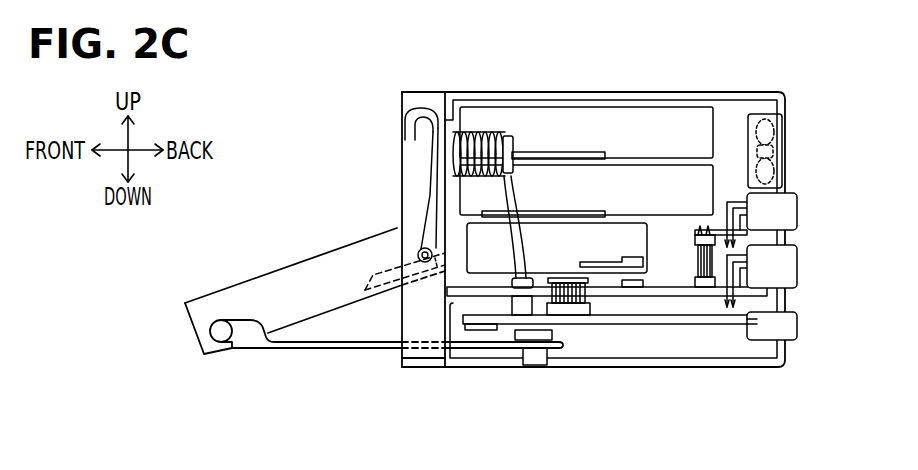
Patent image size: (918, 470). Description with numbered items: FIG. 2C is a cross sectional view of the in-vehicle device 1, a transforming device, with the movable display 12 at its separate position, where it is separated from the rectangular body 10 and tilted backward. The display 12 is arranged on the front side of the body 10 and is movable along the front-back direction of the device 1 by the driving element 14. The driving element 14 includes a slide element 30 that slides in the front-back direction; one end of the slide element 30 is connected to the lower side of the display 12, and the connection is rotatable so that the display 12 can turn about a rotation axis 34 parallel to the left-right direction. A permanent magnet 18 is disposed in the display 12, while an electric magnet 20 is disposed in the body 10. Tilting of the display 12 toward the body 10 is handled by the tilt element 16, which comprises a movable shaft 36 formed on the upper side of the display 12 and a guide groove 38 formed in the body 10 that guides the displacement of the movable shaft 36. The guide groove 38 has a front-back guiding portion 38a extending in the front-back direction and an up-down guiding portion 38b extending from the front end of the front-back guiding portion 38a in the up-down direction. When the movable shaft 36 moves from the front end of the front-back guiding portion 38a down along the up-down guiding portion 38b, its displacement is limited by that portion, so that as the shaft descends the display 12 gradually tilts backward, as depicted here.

The in-vehicle device 1 is at (794, 92).
The body 10 is at (622, 93).
The movable display 12 is at (257, 292).
The driving element 14 is at (262, 350).
The tilt element 16 is at (414, 192).
The permanent magnet 18 is at (370, 275).
The electric magnet 20 is at (508, 132).
The slide element 30 is at (317, 349).
The rotation axis 34 is at (217, 331).
The movable shaft 36 is at (422, 251).
The guide groove 38 is at (380, 147).
The front-back guiding portion 38a is at (415, 107).
The up-down guiding portion 38b is at (410, 152).